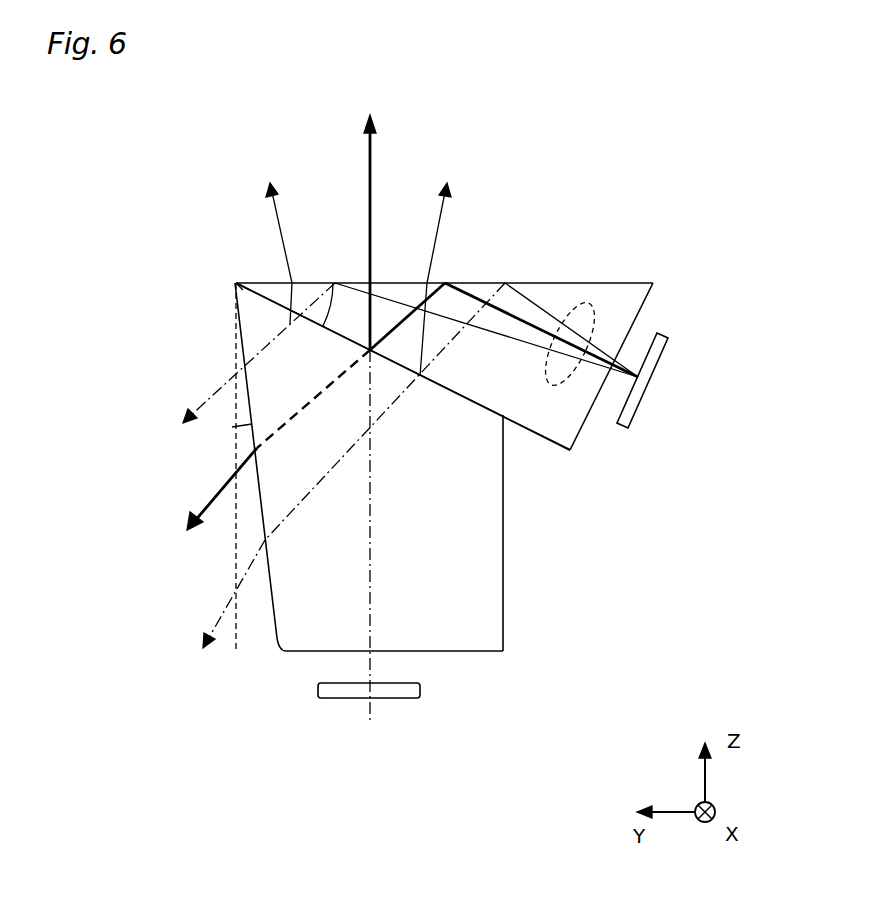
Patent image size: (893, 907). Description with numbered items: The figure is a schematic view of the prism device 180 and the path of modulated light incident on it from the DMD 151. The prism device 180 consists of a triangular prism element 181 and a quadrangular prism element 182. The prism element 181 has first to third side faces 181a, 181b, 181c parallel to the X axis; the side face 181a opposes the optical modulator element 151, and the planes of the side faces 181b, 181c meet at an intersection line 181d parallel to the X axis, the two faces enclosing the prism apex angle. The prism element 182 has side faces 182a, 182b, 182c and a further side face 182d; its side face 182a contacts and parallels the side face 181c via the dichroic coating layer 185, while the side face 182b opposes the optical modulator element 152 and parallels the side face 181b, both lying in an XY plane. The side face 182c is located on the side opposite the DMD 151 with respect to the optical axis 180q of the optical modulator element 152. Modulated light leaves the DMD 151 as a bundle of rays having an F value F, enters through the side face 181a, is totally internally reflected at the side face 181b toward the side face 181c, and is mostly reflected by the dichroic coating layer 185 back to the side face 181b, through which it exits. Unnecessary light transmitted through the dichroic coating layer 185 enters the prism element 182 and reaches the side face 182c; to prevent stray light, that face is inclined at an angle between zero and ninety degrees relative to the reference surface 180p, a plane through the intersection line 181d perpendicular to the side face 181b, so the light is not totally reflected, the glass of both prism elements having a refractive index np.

The prism device 180 is at (208, 167).
The prism element 181 is at (435, 354).
The first side face 181a is at (633, 327).
The second side face 181b is at (478, 283).
The third side face 181c is at (543, 440).
The intersection line 181d is at (232, 281).
The prism element 182 is at (425, 512).
The fourth side face 182a is at (457, 392).
The fifth side face 182b is at (447, 653).
The sixth side face 182c is at (277, 637).
The side face 182d is at (503, 570).
The dichroic coating layer 185 is at (370, 350).
The DMD 151 is at (633, 407).
The optical modulator element 152 is at (390, 693).
The reference surface 180p is at (235, 535).
The optical axis 180q is at (369, 603).
The refractive index np is at (483, 380).
The F value F is at (580, 307).